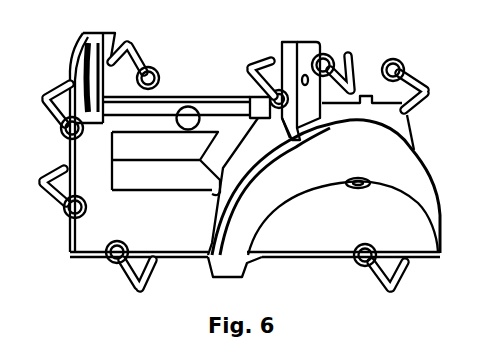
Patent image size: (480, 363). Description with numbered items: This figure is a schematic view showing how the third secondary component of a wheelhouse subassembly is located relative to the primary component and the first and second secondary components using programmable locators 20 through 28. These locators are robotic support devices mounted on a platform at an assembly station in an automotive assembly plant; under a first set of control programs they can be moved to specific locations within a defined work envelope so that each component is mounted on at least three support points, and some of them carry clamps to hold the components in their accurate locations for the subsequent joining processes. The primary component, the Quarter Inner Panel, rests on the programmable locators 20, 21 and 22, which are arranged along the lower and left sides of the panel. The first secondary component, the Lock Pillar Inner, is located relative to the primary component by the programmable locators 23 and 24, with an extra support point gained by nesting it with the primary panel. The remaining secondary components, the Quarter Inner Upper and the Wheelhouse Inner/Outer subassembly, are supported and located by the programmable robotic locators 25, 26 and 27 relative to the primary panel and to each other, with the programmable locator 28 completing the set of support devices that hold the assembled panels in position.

The programmable locator 20 is at (188, 107).
The programmable locator 21 is at (127, 287).
The programmable locator 22 is at (52, 198).
The programmable locator 23 is at (53, 114).
The programmable locator 24 is at (149, 64).
The programmable locator 25 is at (258, 60).
The programmable locator 26 is at (332, 60).
The programmable locator 27 is at (403, 68).
The programmable locator 28 is at (375, 277).